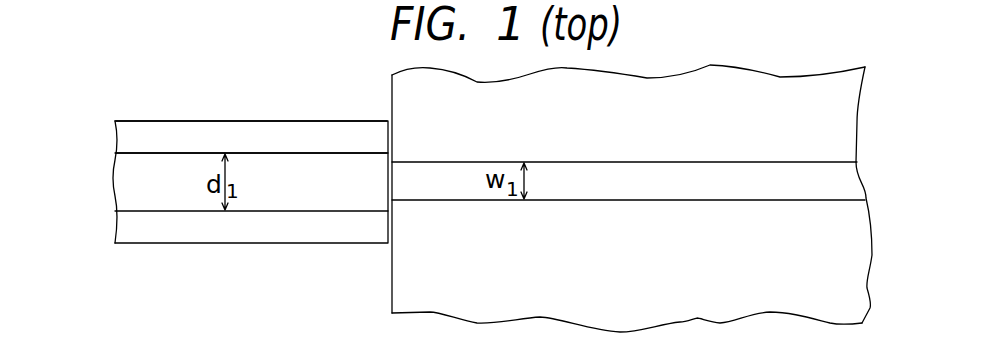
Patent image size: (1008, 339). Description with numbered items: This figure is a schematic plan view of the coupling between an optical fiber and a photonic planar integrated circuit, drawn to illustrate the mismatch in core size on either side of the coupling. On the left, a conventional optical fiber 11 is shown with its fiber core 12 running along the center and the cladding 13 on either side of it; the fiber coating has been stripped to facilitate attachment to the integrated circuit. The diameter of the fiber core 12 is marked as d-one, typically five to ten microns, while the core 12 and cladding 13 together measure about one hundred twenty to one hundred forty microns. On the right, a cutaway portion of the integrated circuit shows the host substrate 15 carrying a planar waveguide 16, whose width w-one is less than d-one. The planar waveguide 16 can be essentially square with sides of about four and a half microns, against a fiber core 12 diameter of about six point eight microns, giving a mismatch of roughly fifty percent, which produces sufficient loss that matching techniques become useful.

The optical fiber 11 is at (198, 243).
The fiber core 12 is at (115, 178).
The cladding 13 is at (215, 132).
The host substrate 15 is at (392, 277).
The planar waveguide 16 is at (649, 190).